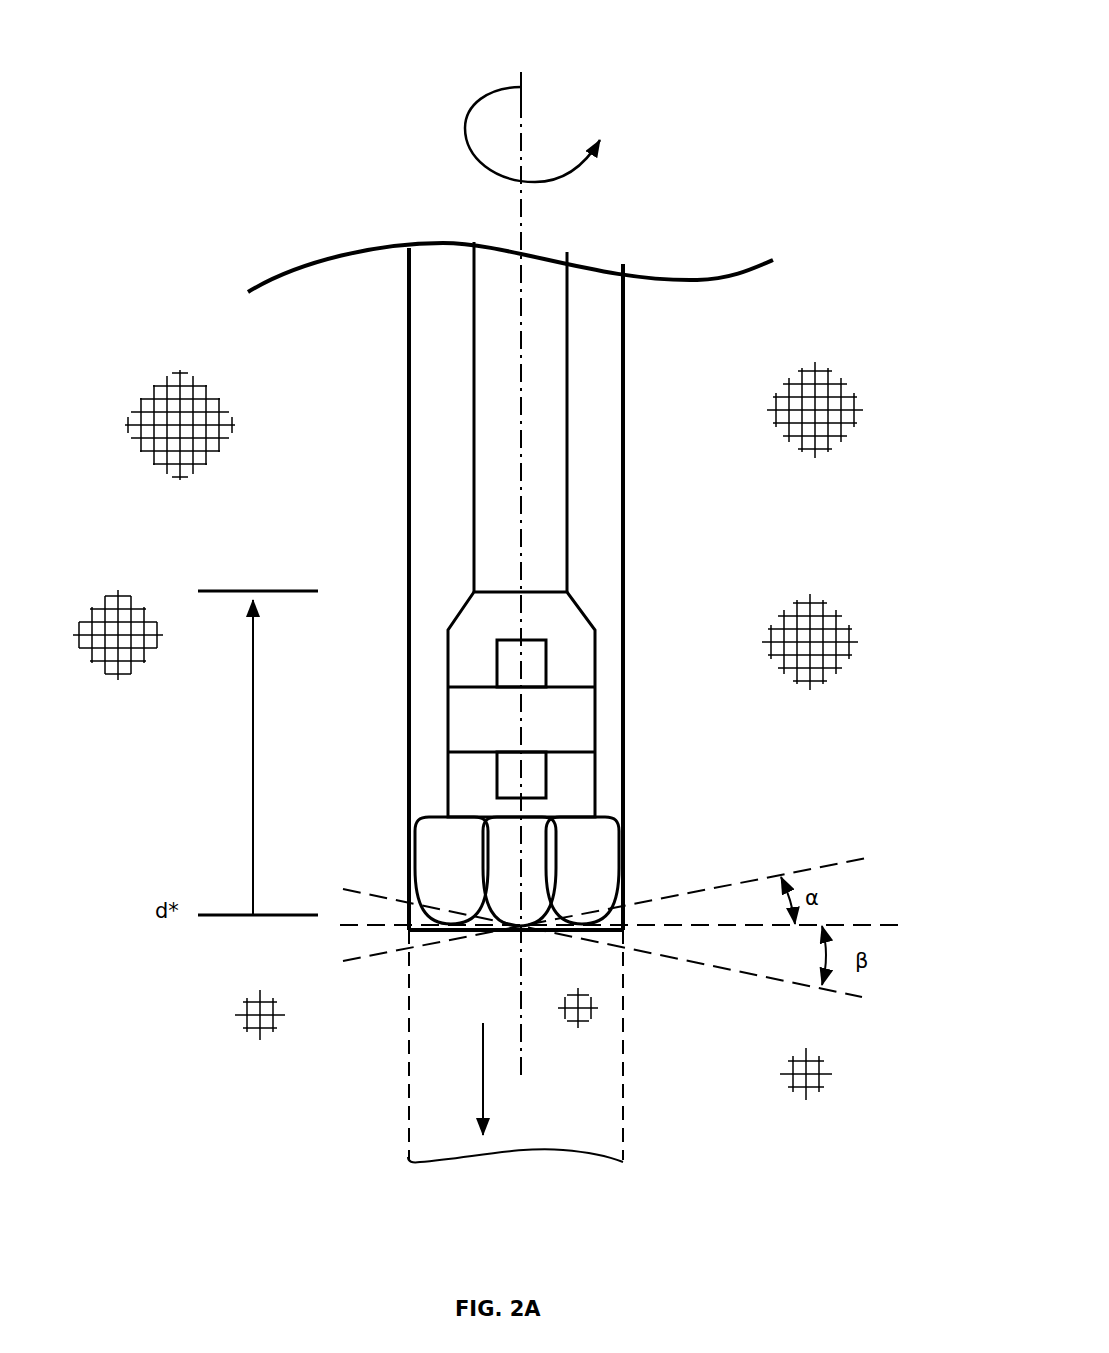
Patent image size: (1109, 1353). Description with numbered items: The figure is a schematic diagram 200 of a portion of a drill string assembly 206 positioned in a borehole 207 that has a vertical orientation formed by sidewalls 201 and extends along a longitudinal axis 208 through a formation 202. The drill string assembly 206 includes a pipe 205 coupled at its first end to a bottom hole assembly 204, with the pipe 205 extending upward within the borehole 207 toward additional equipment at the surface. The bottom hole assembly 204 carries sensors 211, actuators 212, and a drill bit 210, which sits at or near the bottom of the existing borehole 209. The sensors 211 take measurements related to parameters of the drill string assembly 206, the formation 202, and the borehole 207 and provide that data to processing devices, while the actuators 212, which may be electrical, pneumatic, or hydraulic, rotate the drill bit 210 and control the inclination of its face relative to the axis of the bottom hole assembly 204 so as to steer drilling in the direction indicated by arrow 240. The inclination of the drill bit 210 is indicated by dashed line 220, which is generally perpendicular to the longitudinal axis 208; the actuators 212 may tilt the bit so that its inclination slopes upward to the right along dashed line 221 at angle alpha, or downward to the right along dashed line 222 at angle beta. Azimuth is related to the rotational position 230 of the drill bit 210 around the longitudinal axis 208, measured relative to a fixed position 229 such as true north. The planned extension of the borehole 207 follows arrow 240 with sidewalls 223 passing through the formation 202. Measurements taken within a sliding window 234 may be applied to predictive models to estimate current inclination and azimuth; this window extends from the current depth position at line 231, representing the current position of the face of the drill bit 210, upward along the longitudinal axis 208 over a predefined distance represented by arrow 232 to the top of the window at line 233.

The schematic diagram 200 is at (722, 55).
The sidewalls 201 is at (409, 452).
The formation 202 is at (235, 378).
The bottom hole assembly 204 is at (448, 608).
The pipe 205 is at (567, 435).
The drill string assembly 206 is at (474, 365).
The borehole 207 is at (585, 510).
The longitudinal axis 208 is at (521, 235).
The bottom of the existing borehole 209 is at (503, 934).
The drill bit 210 is at (619, 835).
The sensors 211 is at (546, 662).
The actuators 212 is at (546, 775).
The dashed line 220 is at (862, 925).
The dashed line 221 is at (842, 858).
The dashed line 222 is at (850, 993).
The sidewalls 223 is at (408, 1085).
The fixed position 229 is at (523, 80).
The rotational position 230 is at (465, 123).
The line 231 is at (228, 918).
The arrow 232 is at (253, 748).
The line 233 is at (233, 591).
The sliding window 234 is at (185, 760).
The arrow 240 is at (483, 1050).